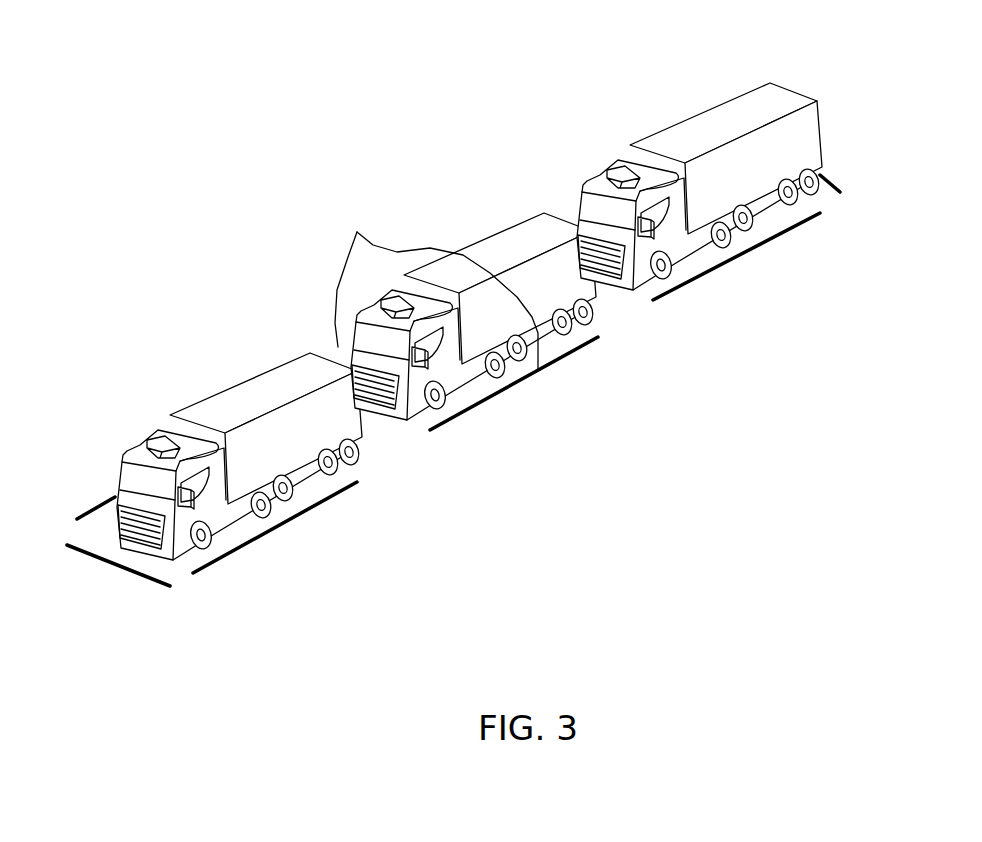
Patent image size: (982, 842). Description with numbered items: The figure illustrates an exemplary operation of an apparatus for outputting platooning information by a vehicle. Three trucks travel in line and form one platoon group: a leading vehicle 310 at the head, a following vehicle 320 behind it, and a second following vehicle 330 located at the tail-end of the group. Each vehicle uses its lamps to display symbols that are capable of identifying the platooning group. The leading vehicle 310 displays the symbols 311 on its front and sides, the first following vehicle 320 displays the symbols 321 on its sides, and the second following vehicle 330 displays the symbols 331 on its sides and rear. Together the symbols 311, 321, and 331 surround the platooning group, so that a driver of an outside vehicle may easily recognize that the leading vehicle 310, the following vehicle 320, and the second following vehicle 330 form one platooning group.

The leading vehicle 310 is at (260, 390).
The symbols 311 is at (88, 513).
The following vehicle 320 is at (507, 235).
The symbols 321 is at (357, 232).
The second following vehicle 330 is at (710, 122).
The symbols 331 is at (832, 190).